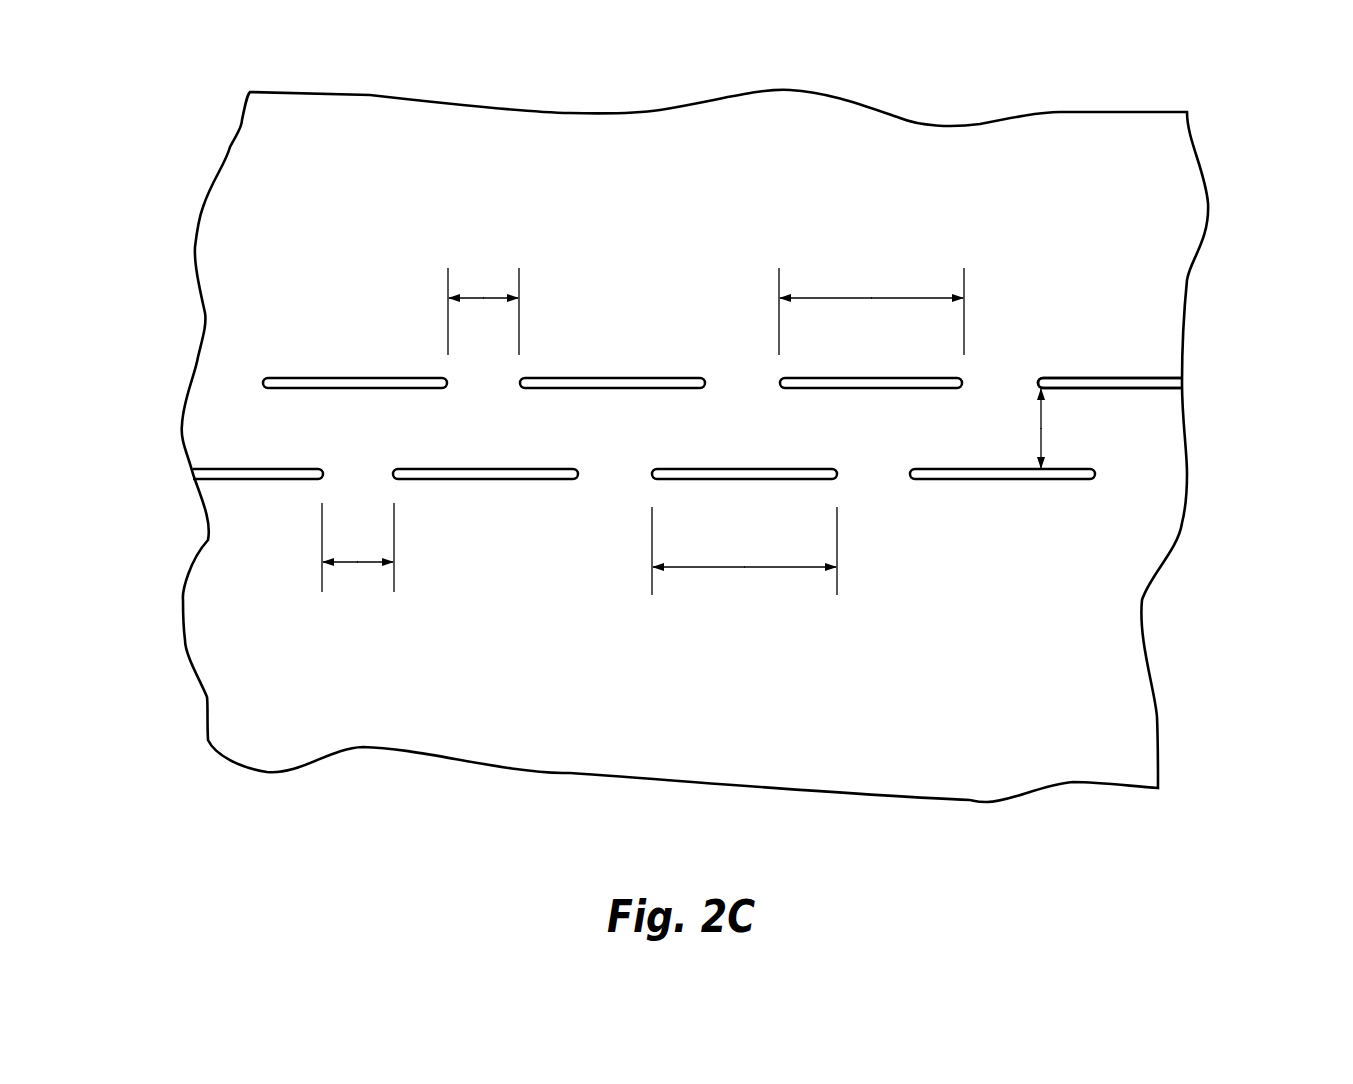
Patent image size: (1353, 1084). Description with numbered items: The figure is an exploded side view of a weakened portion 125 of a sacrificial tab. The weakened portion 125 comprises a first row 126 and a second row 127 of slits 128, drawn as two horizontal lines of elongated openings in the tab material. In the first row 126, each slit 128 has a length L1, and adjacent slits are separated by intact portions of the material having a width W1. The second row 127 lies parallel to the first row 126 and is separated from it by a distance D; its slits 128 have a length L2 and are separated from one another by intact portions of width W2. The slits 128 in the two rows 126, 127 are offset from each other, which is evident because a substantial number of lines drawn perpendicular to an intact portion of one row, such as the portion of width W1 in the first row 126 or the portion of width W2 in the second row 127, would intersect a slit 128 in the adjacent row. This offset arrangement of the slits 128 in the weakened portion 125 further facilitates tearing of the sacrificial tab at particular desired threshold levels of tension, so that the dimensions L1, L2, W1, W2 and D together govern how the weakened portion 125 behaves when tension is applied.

The weakened portion 125 is at (628, 421).
The first row 126 is at (1196, 476).
The second row 127 is at (1205, 383).
The slits 128 is at (618, 377).
The width of intact portions in first row W1 is at (358, 563).
The width of intact portions in second row W2 is at (483, 293).
The length of slits in first row L1 is at (738, 568).
The length of slits in second row L2 is at (872, 298).
The distance between rows D is at (1041, 428).